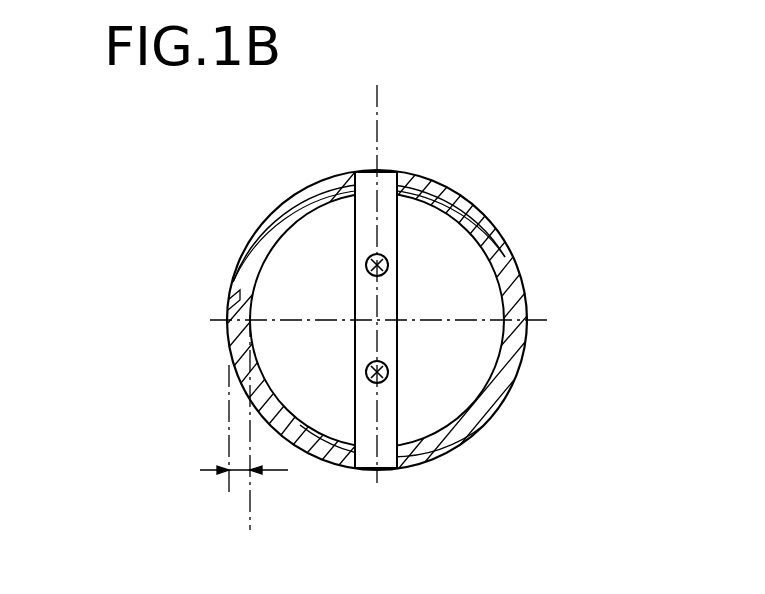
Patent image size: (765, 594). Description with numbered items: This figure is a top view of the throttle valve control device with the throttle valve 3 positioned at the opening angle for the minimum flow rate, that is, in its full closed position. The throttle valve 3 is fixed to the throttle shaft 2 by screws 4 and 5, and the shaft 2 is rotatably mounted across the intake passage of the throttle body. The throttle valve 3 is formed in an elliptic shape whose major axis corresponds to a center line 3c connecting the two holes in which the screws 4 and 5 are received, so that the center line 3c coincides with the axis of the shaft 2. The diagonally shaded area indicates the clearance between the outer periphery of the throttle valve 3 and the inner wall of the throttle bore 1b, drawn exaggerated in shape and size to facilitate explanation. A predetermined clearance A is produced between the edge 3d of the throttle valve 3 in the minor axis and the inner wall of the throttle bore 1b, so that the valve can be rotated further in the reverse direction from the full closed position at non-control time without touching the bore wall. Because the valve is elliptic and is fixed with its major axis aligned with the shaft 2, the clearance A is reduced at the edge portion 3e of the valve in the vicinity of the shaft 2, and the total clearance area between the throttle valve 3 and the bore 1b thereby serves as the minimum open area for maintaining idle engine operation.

The throttle bore 1b is at (233, 292).
The throttle shaft 2 is at (357, 238).
The throttle valve 3 is at (300, 261).
The center line 3c is at (376, 106).
The edge 3d is at (227, 305).
The edge portion 3e is at (353, 176).
The screw 4 is at (390, 258).
The screw 5 is at (390, 373).
The clearance A is at (239, 422).